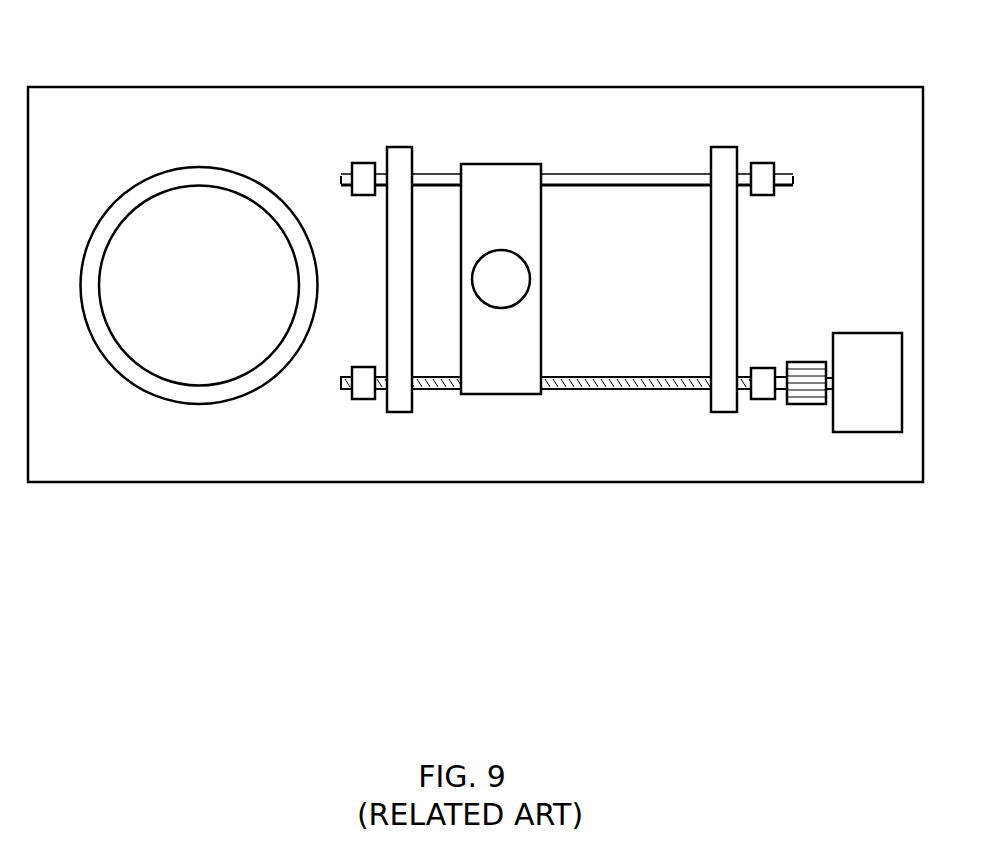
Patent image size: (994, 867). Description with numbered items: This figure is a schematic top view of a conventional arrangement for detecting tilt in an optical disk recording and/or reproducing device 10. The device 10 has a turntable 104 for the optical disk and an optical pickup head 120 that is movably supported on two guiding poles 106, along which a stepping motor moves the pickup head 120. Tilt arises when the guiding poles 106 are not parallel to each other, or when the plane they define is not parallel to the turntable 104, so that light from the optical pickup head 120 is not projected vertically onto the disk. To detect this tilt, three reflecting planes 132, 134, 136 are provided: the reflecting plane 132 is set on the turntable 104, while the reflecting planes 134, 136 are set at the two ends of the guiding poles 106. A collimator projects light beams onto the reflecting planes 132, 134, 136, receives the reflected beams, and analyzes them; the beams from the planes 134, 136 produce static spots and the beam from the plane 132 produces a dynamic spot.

The optical disk recording and/or reproducing device 10 is at (811, 88).
The turntable 104 is at (153, 192).
The reflecting plane 132 is at (220, 247).
The guiding poles 106 is at (633, 176).
The optical pickup head 120 is at (525, 185).
The reflecting plane 134 is at (402, 165).
The reflecting plane 136 is at (721, 165).